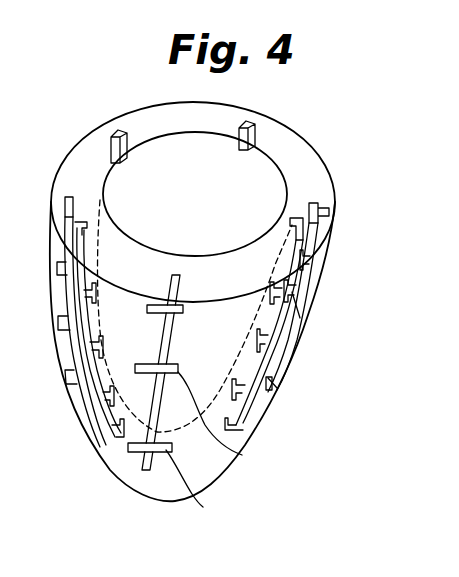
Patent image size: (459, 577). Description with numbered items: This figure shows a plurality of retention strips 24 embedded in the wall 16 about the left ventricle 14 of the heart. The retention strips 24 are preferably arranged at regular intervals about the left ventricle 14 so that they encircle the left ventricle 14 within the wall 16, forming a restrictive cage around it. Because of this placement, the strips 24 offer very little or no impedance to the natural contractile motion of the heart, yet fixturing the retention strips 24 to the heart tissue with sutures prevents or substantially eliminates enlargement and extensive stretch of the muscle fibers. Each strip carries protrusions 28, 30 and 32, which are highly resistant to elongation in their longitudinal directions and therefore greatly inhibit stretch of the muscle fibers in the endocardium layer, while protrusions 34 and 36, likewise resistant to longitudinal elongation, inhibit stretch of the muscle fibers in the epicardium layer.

The left ventricle 14 is at (207, 185).
The wall 16 is at (299, 132).
The retention strips 24 is at (115, 125).
The protrusion 28 is at (185, 305).
The protrusion 30 is at (242, 455).
The protrusion 32 is at (198, 488).
The protrusion 34 is at (302, 323).
The protrusion 36 is at (277, 386).